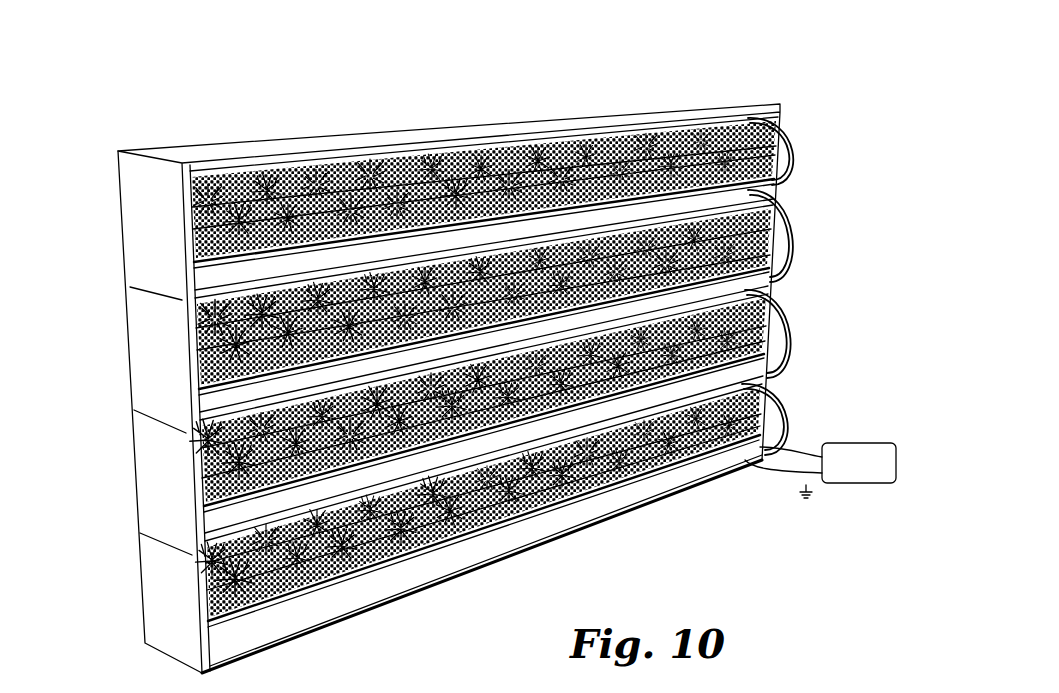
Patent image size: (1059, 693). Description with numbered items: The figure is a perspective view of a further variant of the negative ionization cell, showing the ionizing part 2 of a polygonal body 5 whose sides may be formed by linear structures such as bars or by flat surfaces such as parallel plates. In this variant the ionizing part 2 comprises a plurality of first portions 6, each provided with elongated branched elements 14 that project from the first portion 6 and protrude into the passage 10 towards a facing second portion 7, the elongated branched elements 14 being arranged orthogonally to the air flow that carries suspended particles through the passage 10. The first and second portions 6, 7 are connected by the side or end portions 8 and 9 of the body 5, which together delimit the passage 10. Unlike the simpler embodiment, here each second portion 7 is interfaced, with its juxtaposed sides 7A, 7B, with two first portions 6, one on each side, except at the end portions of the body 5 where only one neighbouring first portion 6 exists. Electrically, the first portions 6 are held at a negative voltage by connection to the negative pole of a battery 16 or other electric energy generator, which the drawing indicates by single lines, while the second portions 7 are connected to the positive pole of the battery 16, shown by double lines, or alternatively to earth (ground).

The ionizing part 2 is at (780, 70).
The polygonal body 5 is at (152, 667).
The first portion 6 is at (742, 172).
The second portion 7 is at (594, 200).
The juxtaposed side of second portion 7A is at (207, 408).
The juxtaposed side of second portion 7B is at (212, 448).
The side or end portion 8 is at (150, 364).
The side or end portion 9 is at (775, 250).
The passage 10 is at (680, 134).
The elongated branched elements 14 is at (310, 252).
The battery 16 is at (868, 440).